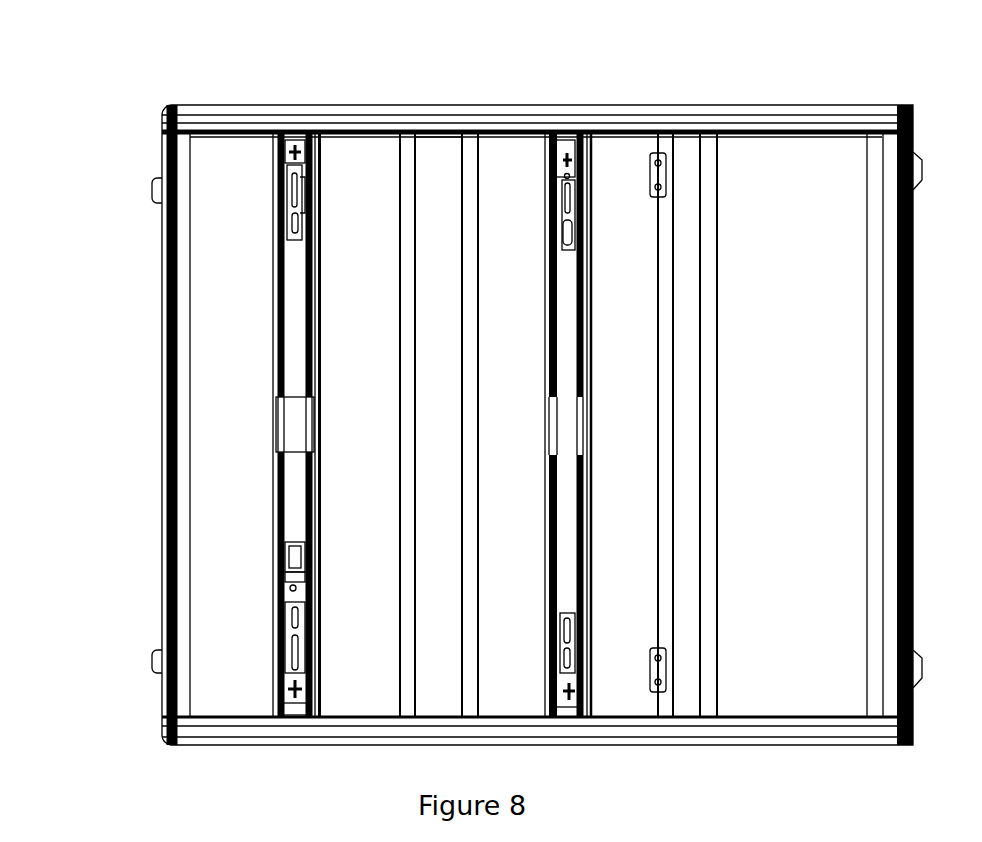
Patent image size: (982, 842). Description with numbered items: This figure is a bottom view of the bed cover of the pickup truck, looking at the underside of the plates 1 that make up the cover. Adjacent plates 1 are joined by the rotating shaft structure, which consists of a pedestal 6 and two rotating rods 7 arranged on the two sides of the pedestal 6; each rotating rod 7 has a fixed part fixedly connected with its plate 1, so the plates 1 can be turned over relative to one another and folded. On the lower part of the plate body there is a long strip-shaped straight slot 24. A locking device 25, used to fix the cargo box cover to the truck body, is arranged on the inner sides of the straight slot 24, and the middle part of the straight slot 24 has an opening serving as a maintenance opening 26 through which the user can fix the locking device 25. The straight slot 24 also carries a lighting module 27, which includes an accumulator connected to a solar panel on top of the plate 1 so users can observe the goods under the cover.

The plate 1 is at (355, 153).
The pedestal 6 is at (448, 160).
The rotating rod 7 is at (468, 160).
The straight slot 24 is at (303, 282).
The locking device 25 is at (290, 175).
The maintenance opening 26 is at (278, 430).
The lighting module 27 is at (295, 556).